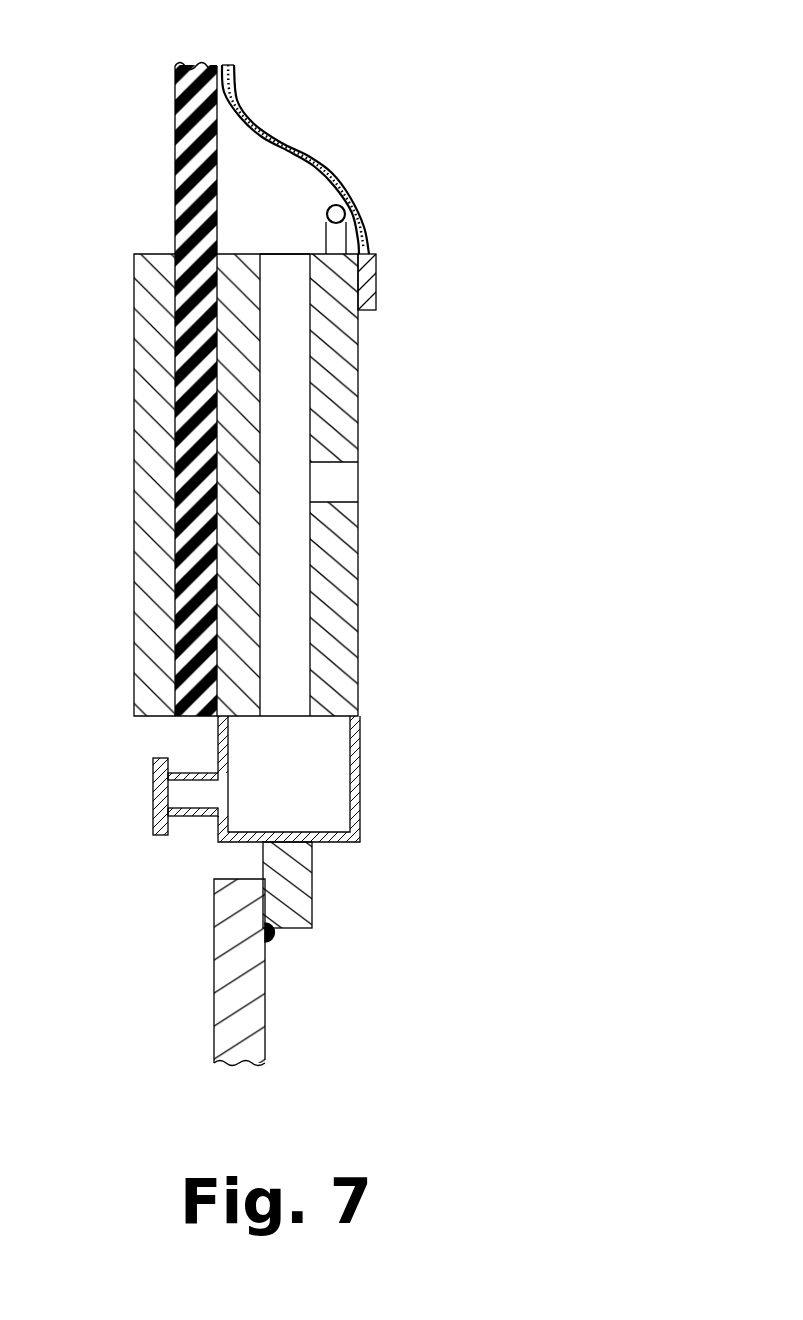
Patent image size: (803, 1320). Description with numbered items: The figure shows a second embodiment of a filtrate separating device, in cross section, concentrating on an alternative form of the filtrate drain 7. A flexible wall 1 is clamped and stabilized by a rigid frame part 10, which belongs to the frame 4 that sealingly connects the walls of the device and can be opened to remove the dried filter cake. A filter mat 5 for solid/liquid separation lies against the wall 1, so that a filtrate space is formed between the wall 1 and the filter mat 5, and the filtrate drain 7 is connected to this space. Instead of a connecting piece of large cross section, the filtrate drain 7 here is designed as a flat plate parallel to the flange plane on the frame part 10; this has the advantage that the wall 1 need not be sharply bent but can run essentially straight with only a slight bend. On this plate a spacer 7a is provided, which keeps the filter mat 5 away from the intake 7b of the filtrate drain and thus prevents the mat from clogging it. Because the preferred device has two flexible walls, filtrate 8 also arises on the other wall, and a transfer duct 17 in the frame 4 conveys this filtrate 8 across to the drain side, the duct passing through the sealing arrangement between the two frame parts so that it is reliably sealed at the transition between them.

The wall 1 is at (190, 171).
The frame 4 is at (233, 955).
The filter mat 5 is at (312, 156).
The filtrate drain 7 is at (338, 395).
The spacer 7a is at (343, 232).
The intake 7b is at (280, 253).
The filtrate 8 is at (218, 745).
The frame part 10 is at (135, 617).
The transfer duct 17 is at (340, 502).